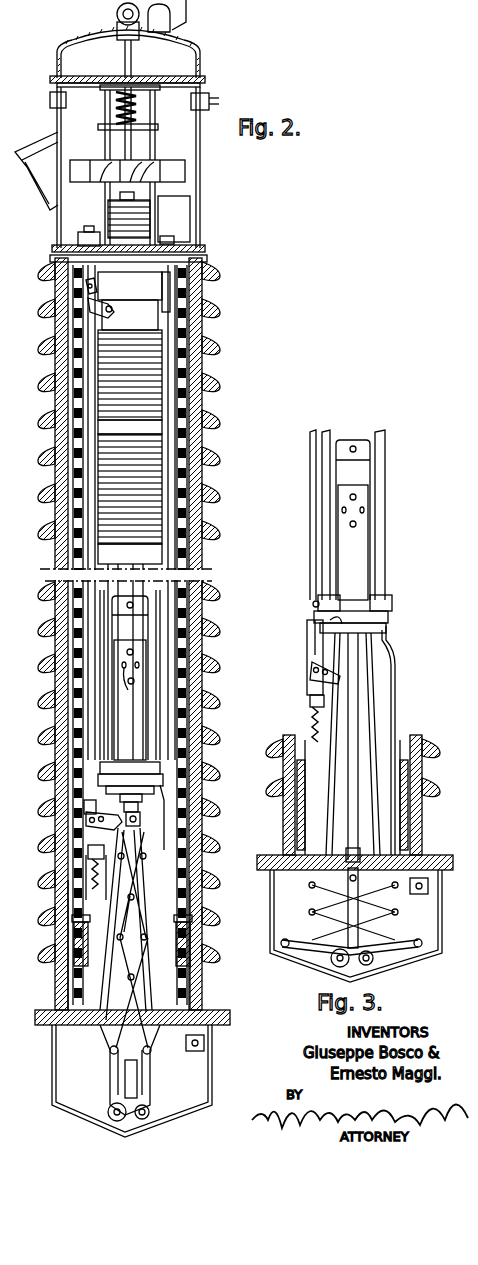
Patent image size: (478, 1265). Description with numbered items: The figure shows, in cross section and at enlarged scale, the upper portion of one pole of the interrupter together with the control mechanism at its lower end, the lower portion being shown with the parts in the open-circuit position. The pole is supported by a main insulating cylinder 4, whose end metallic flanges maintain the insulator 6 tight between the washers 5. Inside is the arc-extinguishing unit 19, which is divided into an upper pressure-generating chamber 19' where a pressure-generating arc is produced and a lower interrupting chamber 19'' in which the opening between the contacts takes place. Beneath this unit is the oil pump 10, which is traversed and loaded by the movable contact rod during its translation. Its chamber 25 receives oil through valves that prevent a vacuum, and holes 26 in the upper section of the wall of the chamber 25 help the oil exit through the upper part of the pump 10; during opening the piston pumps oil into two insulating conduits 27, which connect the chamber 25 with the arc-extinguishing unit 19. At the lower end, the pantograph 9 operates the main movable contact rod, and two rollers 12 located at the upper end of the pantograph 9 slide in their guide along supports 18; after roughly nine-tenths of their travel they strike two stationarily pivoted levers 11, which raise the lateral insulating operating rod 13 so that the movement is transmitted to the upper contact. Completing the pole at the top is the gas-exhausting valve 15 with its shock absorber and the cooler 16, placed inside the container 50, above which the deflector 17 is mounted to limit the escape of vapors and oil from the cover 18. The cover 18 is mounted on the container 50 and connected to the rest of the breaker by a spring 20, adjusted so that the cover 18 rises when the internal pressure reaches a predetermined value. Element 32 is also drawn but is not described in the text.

In FIG. 2, the main insulating cylinder 4 is at (198, 520).
In FIG. 2, the washers 5 is at (205, 250).
In FIG. 2, the insulator 6 is at (203, 422).
In FIG. 2, the pantograph 9 is at (132, 982).
In FIG. 3, the pantograph 9 is at (356, 926).
In FIG. 2, the oil pump 10 is at (130, 678).
In FIG. 3, the oil pump 10 is at (358, 548).
In FIG. 2, the operating levers 11 is at (84, 818).
In FIG. 3, the operating levers 11 is at (360, 683).
In FIG. 2, the rollers 12 is at (137, 820).
In FIG. 3, the rollers 12 is at (343, 908).
In FIG. 2, the lateral insulating operating rod 13 is at (88, 536).
In FIG. 3, the lateral insulating operating rod 13 is at (310, 483).
In FIG. 2, the gas-exhausting valve 15 is at (174, 220).
In FIG. 2, the cooler 16 is at (155, 206).
In FIG. 2, the deflector 17 is at (172, 166).
In FIG. 2, the cover 18 is at (193, 50).
In FIG. 3, the cover 18 is at (375, 715).
In FIG. 2, the arc-extinguishing unit 19 is at (88, 415).
In FIG. 2, the pressure-generating chamber 19' is at (87, 375).
In FIG. 2, the interrupting chamber 19'' is at (87, 489).
In FIG. 2, the spring 20 is at (143, 104).
In FIG. 3, the chamber 25 is at (370, 573).
In FIG. 2, the holes 26 is at (128, 689).
In FIG. 2, the insulating conduits 27 is at (158, 632).
In FIG. 2, the lever 32 is at (72, 293).
In FIG. 2, the container 50 is at (200, 160).